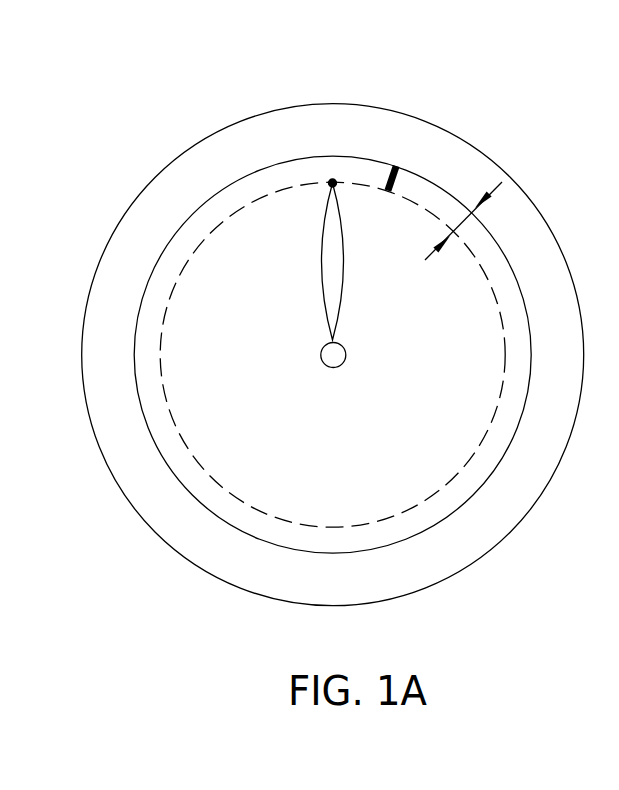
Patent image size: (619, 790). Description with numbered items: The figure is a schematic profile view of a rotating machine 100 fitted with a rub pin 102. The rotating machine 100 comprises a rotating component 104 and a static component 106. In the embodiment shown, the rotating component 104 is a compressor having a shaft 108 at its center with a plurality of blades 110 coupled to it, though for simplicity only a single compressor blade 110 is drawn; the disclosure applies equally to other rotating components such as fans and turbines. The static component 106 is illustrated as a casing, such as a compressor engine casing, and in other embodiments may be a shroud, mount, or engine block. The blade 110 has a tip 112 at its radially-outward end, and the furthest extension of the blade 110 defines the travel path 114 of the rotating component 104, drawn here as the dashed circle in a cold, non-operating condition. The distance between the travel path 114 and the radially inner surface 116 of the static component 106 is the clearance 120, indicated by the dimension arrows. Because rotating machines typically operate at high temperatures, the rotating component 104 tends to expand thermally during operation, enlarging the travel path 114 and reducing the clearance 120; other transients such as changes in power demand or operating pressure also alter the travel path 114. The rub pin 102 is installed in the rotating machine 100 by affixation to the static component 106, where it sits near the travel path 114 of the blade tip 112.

The rotating machine 100 is at (160, 110).
The rub pin 102 is at (397, 173).
The rotating component 104 is at (288, 275).
The static component 106 is at (343, 125).
The shaft 108 is at (335, 353).
The blade 110 is at (322, 291).
The tip 112 is at (332, 182).
The travel path 114 is at (465, 468).
The radially inner surface 116 is at (519, 418).
The clearance 120 is at (464, 218).